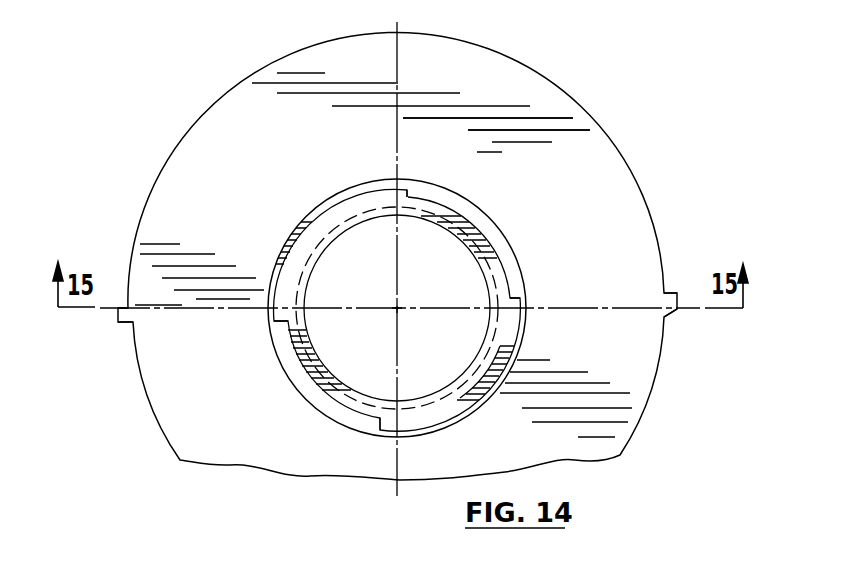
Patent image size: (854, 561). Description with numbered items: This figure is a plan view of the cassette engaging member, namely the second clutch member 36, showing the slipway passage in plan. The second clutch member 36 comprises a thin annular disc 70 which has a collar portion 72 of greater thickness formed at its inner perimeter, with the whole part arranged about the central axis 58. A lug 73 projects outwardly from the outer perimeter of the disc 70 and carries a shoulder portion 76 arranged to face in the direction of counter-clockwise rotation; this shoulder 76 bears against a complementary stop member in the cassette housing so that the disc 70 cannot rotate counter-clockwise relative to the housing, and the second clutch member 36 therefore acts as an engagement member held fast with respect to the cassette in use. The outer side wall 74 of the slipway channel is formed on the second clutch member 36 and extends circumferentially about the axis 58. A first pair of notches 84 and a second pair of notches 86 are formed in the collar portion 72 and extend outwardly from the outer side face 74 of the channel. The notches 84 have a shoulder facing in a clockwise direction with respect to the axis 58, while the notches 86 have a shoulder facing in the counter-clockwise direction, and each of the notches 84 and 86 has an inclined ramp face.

The second clutch member 36 is at (528, 88).
The axis 58 is at (395, 304).
The annular disc 70 is at (193, 147).
The collar portion 72 is at (293, 242).
The lug 73 is at (120, 310).
The outer side wall 74 is at (315, 230).
The shoulder portion 76 is at (128, 327).
The first pair of notches 84 is at (518, 306).
The second pair of notches 86 is at (408, 190).